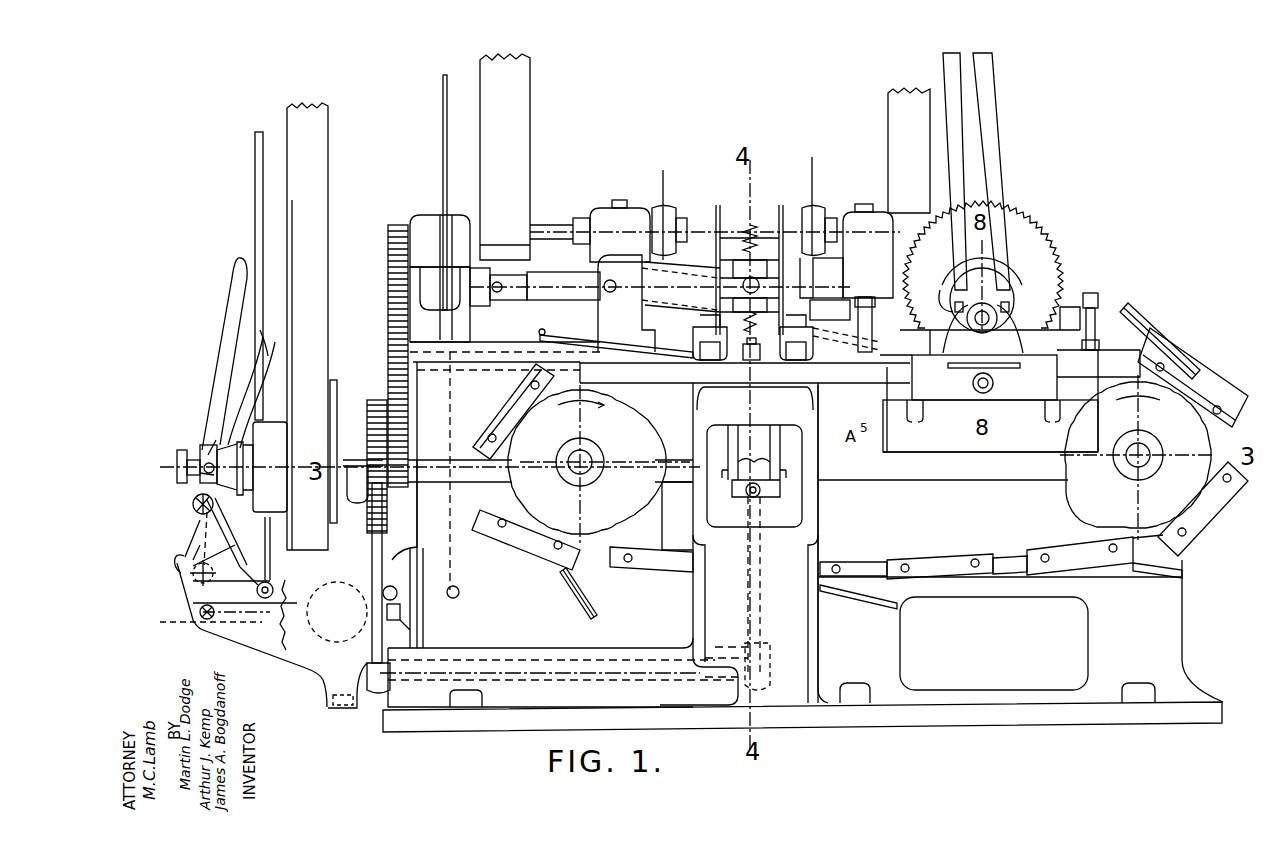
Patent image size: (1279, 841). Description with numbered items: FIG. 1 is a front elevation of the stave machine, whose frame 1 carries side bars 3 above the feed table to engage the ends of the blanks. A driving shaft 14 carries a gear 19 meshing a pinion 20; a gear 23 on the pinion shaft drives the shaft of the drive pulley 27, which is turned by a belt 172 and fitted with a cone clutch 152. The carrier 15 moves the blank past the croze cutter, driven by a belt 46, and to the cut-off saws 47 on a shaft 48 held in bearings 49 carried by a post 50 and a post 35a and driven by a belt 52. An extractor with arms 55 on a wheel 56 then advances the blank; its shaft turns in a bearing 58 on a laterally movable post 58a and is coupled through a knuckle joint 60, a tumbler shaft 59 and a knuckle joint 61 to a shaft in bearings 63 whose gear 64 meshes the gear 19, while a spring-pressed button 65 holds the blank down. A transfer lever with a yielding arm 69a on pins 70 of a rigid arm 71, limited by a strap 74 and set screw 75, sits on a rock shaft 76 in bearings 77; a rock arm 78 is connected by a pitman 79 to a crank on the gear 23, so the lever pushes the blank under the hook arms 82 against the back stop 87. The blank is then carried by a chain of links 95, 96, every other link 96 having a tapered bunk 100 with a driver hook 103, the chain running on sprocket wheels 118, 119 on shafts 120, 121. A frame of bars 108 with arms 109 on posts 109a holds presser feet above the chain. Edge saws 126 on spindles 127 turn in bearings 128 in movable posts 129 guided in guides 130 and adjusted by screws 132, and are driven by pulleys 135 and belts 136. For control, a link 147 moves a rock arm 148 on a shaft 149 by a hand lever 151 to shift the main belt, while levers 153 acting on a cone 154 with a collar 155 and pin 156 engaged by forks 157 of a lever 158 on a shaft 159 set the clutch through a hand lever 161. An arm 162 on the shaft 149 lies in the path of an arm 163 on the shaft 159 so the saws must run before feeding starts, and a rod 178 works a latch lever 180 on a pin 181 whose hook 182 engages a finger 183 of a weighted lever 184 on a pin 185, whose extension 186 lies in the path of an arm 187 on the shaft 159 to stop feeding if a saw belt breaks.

The frame 1 is at (1165, 637).
The side bars 3 is at (687, 468).
The shaft 14 is at (486, 372).
The carrier 15 is at (702, 290).
The gear 19 is at (380, 358).
The pinion 20 is at (397, 482).
The gear 23 is at (367, 410).
The drive pulley 27 is at (338, 394).
The post 35a is at (432, 216).
The belt 46 is at (888, 118).
The saws 47 is at (665, 197).
The shaft 48 is at (548, 224).
The bearings 49 is at (612, 213).
The post 50 is at (821, 278).
The belt 52 is at (523, 140).
The arms 55 is at (720, 208).
The extractor wheel 56 is at (770, 295).
The bearing 58 is at (687, 298).
The post 58a is at (615, 356).
The tumbler shaft 59 is at (550, 278).
The knuckle joint 60 is at (614, 282).
The knuckle joint 61 is at (489, 306).
The bearings 63 is at (442, 302).
The gear 64 is at (388, 245).
The spring-pressed button 65 is at (749, 224).
The yielding arm 69a is at (780, 452).
The pins 70 is at (727, 482).
The rigid arm 71 is at (762, 630).
The strap 74 is at (764, 494).
The set screw 75 is at (749, 496).
The rock shaft 76 is at (495, 672).
The bearings 77 is at (392, 683).
The rock arm 78 is at (372, 556).
The pitman 79 is at (355, 503).
The hook arms 82 is at (708, 362).
The back stop 87 is at (757, 360).
The links 95 is at (870, 562).
The links 96 is at (918, 560).
The bunk 100 is at (552, 402).
The hook 103 is at (596, 616).
The bars 108 is at (869, 314).
The arms 109 is at (1098, 306).
The posts 109a is at (1090, 293).
The sprocket wheel 118 is at (1195, 437).
The sprocket wheel 119 is at (632, 442).
The shaft 120 is at (1130, 463).
The shaft 121 is at (585, 472).
The edge saws 126 is at (1023, 232).
The spindles 127 is at (945, 300).
The bearings 128 is at (995, 293).
The movable posts 129 is at (1005, 322).
The guides 130 is at (925, 368).
The screws 132 is at (993, 383).
The drive pulleys 135 is at (990, 270).
The belts 136 is at (997, 152).
The link 147 is at (256, 212).
The rock arm 148 is at (245, 596).
The shaft 149 is at (195, 577).
The hand lever 151 is at (268, 338).
The cone clutch 152 is at (276, 446).
The levers 153 is at (273, 352).
The cone 154 is at (248, 480).
The collar 155 is at (207, 455).
The pin 156 is at (200, 478).
The forks 157 is at (197, 453).
The lever 158 is at (194, 509).
The shaft 159 is at (185, 527).
The hand lever 161 is at (226, 338).
The arm 162 is at (246, 578).
The arm 163 is at (230, 548).
The belt 172 is at (315, 220).
The rod 178 is at (443, 118).
The latch lever 180 is at (456, 598).
The pin 181 is at (390, 585).
The hook 182 is at (400, 619).
The finger 183 is at (384, 606).
The weighted lever 184 is at (285, 588).
The pin 185 is at (205, 620).
The extension 186 is at (182, 562).
The arm 187 is at (200, 540).